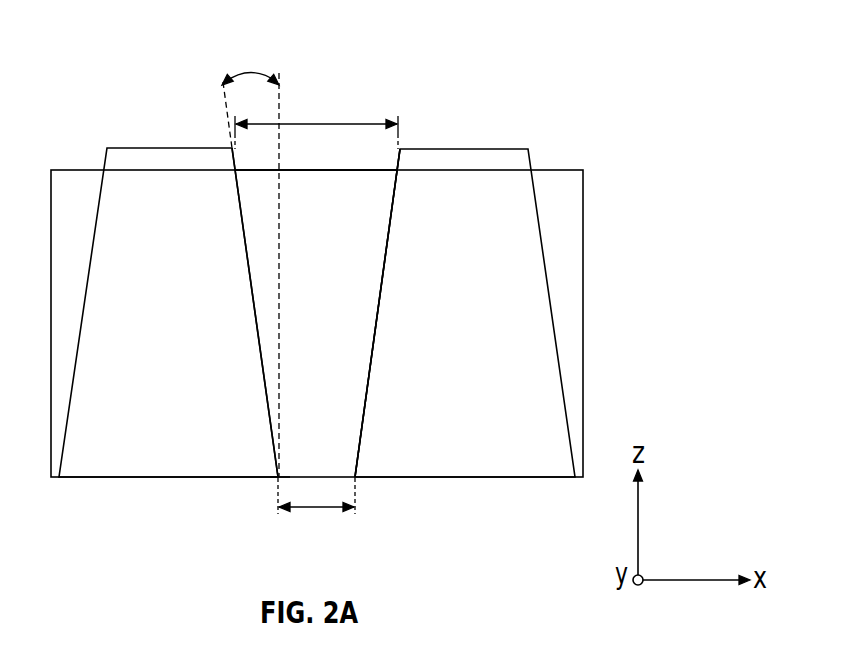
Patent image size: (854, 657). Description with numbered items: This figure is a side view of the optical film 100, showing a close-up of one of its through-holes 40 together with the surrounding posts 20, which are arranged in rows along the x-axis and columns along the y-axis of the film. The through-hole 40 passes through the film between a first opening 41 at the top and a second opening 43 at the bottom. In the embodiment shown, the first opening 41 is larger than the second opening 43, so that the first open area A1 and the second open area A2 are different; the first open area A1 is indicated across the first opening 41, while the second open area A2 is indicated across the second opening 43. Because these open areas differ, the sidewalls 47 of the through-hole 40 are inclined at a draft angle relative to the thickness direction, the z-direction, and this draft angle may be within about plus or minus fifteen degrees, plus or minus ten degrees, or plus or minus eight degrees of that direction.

The optical film 100 is at (72, 138).
The posts 20 is at (470, 173).
The through-hole 40 is at (348, 322).
The first opening 41 is at (353, 136).
The second opening 43 is at (265, 486).
The sidewalls 47 is at (385, 273).
The first open area A1 is at (305, 123).
The second open area A2 is at (312, 508).